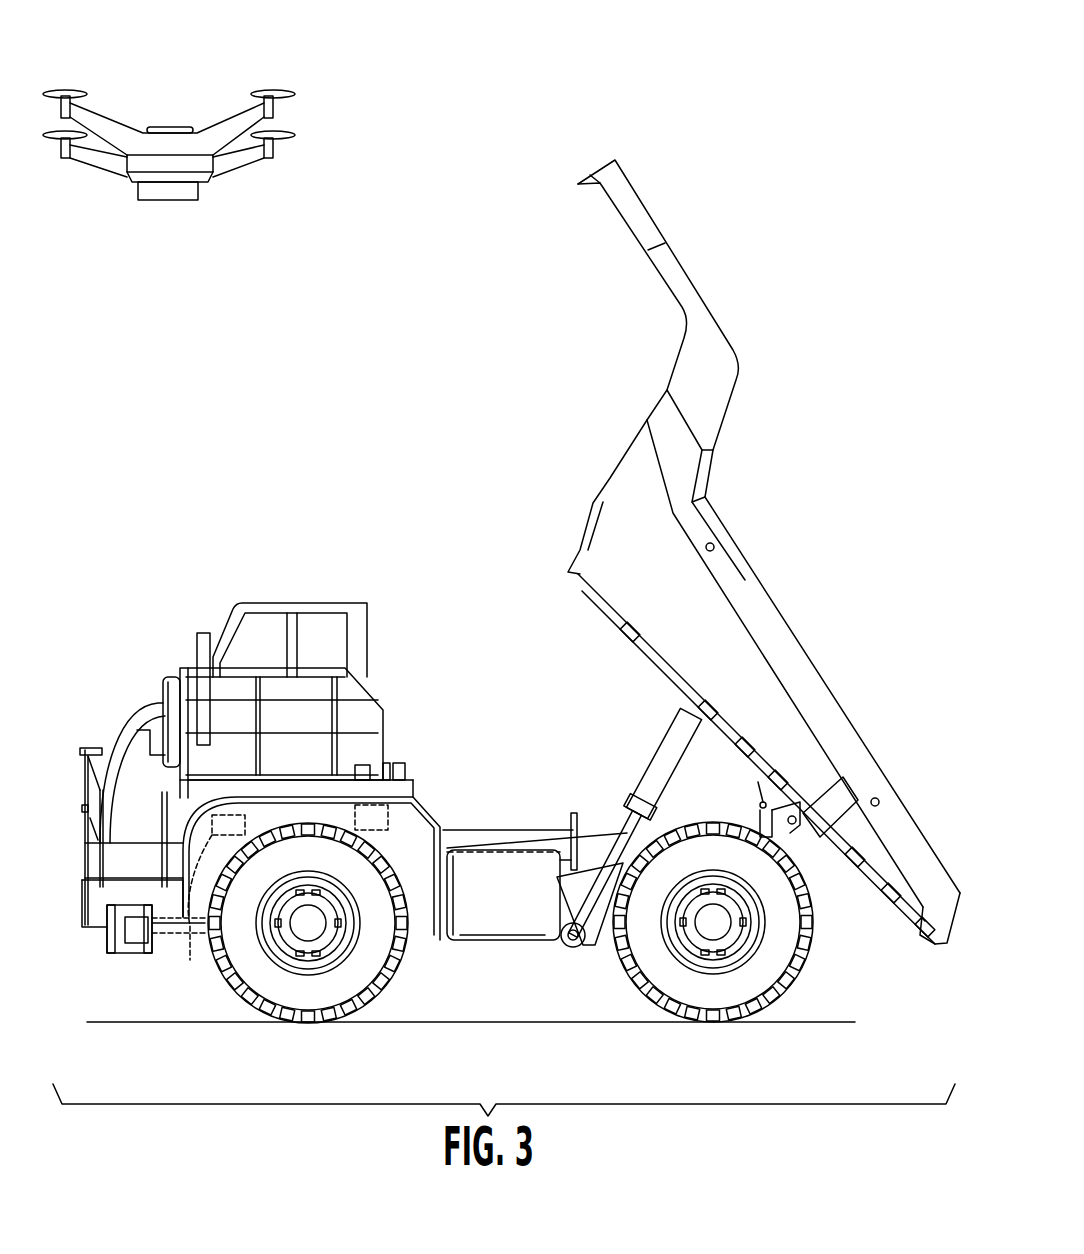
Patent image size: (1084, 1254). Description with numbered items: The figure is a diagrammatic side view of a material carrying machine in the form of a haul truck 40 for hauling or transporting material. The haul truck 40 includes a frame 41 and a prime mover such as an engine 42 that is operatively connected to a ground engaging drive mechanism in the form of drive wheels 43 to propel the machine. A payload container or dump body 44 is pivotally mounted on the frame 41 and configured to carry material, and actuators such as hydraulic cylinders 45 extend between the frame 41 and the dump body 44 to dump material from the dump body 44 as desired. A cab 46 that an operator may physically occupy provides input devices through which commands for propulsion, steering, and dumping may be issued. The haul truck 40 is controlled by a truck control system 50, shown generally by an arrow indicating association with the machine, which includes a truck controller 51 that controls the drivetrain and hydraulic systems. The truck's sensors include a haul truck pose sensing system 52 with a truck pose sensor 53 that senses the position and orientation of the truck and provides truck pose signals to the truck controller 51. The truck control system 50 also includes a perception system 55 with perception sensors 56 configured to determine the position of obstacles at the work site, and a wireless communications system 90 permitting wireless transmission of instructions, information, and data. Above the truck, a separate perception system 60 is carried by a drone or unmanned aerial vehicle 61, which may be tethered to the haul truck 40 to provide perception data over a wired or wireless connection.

The haul truck 40 is at (250, 568).
The frame 41 is at (417, 930).
The engine 42 is at (133, 683).
The drive wheels 43 is at (320, 1000).
The dump body 44 is at (826, 705).
The hydraulic cylinders 45 is at (560, 890).
The cab 46 is at (226, 618).
The truck control system 50 is at (284, 555).
The truck controller 51 is at (212, 903).
The haul truck pose sensing system 52 is at (325, 557).
The truck pose sensor 53 is at (388, 820).
The perception system 55 is at (363, 540).
The perception sensors 56 is at (390, 550).
The perception system 60 is at (181, 111).
The unmanned aerial vehicle 61 is at (245, 160).
The wireless communications system 90 is at (512, 500).